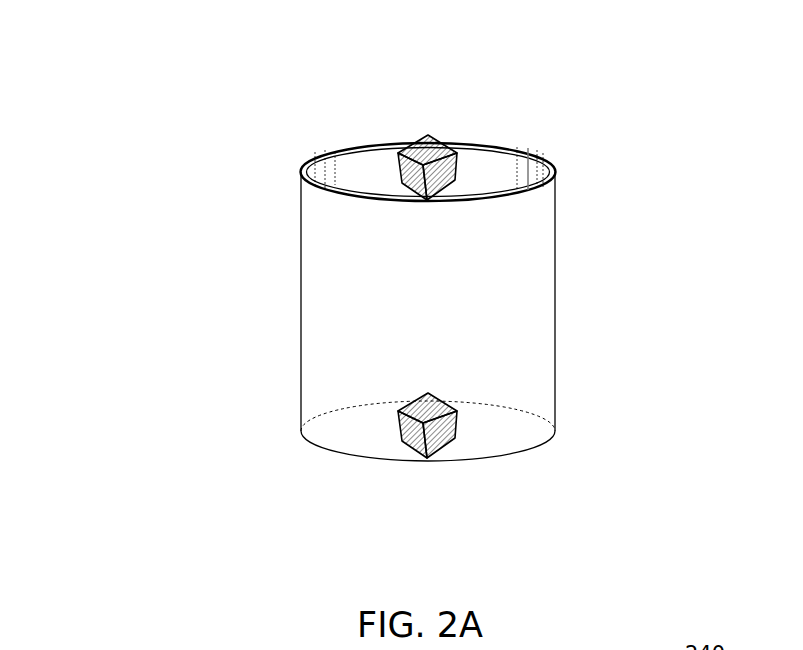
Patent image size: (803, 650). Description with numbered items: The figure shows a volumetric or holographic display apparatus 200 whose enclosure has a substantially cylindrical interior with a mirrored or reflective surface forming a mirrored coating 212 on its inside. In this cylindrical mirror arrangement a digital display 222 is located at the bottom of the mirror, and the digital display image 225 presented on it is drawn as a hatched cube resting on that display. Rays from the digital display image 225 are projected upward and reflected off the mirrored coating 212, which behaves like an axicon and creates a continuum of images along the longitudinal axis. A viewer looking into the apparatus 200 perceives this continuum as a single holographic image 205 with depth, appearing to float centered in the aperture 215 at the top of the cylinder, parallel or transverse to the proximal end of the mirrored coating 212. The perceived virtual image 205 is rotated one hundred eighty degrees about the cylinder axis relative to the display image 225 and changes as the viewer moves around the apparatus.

The holographic display apparatus 200 is at (146, 46).
The mirrored coating 212 is at (336, 158).
The holographic image 205 is at (442, 122).
The aperture 215 is at (564, 170).
The digital display 222 is at (520, 442).
The digital display image 225 is at (394, 458).